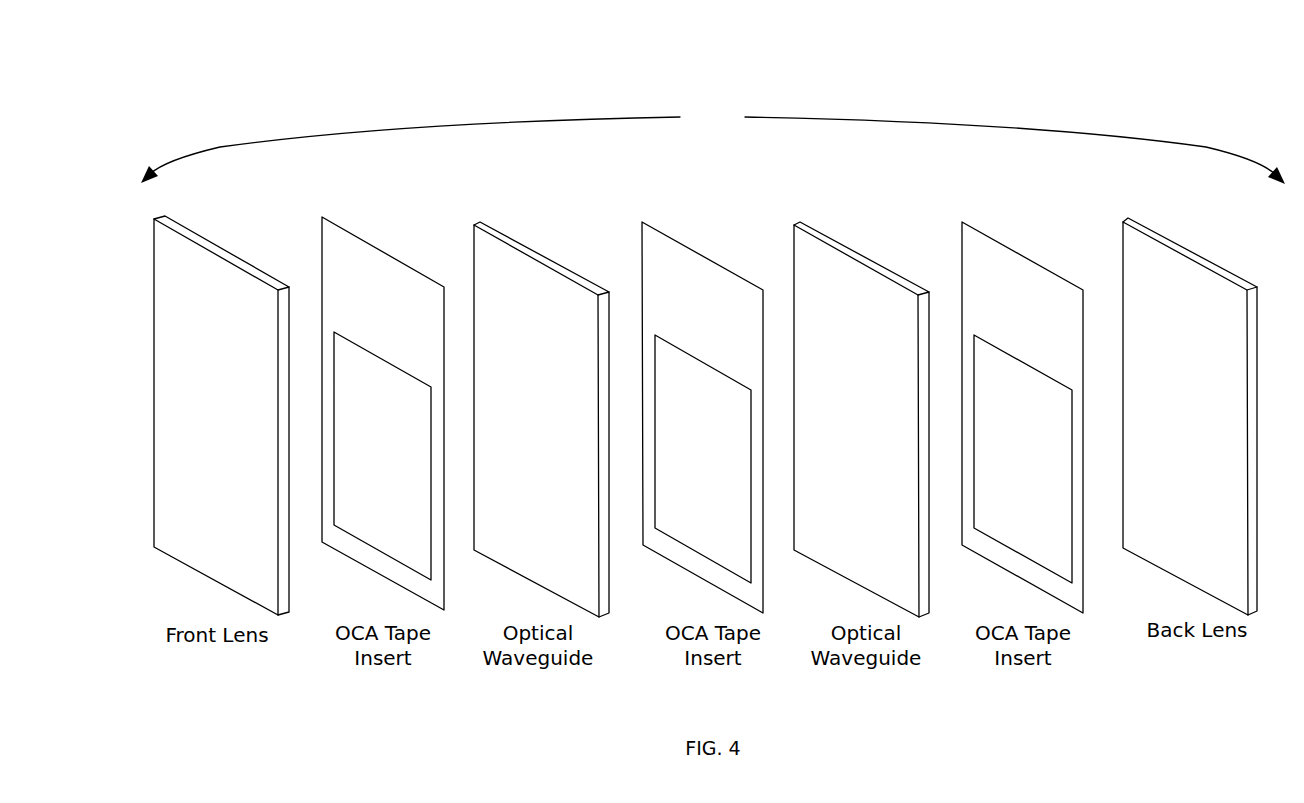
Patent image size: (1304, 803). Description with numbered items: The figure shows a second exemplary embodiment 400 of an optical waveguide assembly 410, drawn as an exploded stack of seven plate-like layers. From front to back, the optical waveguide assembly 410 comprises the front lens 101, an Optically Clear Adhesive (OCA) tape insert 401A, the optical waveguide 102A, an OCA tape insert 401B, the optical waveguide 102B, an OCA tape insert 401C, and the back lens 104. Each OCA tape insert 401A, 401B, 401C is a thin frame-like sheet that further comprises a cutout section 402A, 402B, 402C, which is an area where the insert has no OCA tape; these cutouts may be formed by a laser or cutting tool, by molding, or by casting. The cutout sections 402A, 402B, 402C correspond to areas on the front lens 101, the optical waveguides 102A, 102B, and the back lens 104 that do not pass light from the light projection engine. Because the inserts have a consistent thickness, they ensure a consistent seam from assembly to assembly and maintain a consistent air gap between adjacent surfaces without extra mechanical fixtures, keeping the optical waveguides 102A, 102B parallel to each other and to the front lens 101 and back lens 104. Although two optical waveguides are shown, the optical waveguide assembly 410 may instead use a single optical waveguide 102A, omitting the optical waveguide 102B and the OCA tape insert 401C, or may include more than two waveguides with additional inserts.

The second exemplary embodiment 400 is at (705, 62).
The optical waveguide assembly 410 is at (713, 145).
The front lens 101 is at (176, 226).
The OCA tape insert 401A is at (347, 229).
The cutout section 402A is at (359, 370).
The optical waveguide 102A is at (503, 234).
The OCA tape insert 401B is at (667, 236).
The cutout section 402B is at (678, 370).
The optical waveguide 102B is at (825, 234).
The OCA tape insert 401C is at (987, 236).
The cutout section 402C is at (997, 370).
The back lens 104 is at (1159, 234).